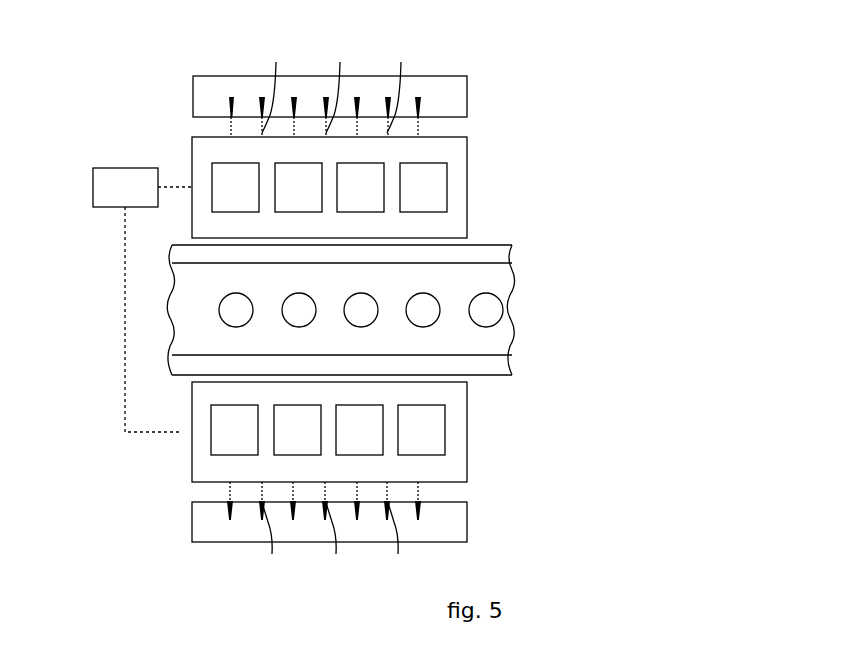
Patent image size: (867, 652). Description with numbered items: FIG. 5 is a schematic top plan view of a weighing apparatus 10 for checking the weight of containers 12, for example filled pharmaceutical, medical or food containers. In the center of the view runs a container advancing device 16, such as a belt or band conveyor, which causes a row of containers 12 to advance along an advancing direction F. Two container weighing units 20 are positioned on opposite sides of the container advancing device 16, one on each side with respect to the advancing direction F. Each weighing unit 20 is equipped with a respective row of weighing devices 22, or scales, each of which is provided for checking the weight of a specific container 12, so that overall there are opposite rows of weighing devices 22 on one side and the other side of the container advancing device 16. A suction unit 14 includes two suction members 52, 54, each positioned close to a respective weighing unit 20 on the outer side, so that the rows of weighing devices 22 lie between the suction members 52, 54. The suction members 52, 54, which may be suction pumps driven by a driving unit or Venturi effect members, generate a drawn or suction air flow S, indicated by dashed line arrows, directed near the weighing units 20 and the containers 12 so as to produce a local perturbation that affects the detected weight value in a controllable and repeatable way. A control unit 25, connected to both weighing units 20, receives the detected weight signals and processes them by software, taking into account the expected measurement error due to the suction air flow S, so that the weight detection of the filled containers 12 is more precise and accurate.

The apparatus 10 is at (124, 94).
The container 12 is at (236, 314).
The suction unit 14 is at (472, 94).
The container advancing device 16 is at (530, 278).
The container weighing unit 20 is at (507, 144).
The weighing device 22 is at (206, 166).
The control unit 25 is at (106, 186).
The suction member 52 is at (217, 78).
The suction member 54 is at (467, 524).
The suction air flow S is at (332, 308).
The advancing direction F is at (197, 312).